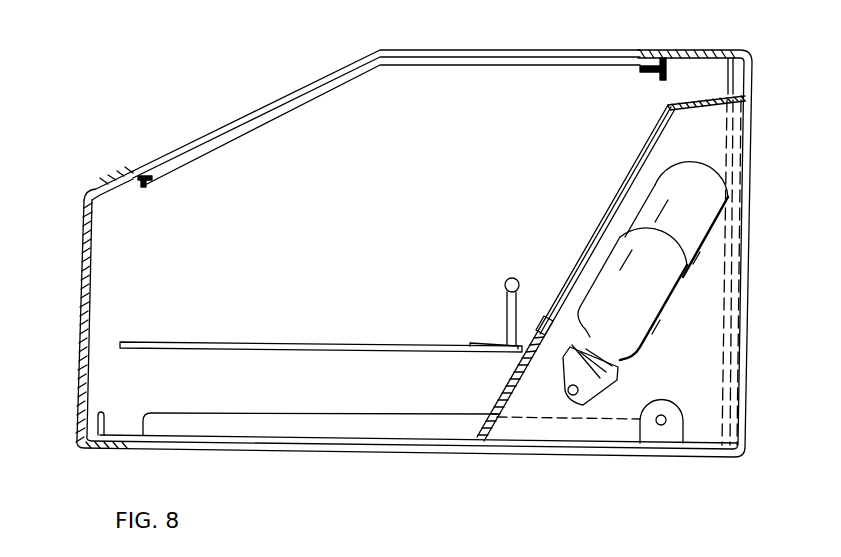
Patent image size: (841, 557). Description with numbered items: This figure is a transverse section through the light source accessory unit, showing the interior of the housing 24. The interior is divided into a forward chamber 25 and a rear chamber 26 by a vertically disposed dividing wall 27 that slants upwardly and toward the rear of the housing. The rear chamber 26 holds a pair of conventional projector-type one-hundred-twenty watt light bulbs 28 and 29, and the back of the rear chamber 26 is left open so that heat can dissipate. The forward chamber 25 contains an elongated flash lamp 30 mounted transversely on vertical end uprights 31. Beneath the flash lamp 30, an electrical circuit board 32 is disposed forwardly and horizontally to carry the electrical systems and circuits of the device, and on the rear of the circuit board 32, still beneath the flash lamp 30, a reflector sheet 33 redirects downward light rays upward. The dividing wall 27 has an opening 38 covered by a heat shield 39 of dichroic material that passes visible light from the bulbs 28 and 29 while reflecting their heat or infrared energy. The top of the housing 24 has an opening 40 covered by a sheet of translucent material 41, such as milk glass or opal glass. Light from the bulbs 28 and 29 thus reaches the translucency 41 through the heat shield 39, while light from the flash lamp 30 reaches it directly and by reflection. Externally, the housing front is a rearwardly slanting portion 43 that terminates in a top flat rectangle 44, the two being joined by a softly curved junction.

The housing 24 is at (82, 220).
The forward chamber 25 is at (97, 290).
The rear chamber 26 is at (708, 383).
The dividing wall 27 is at (512, 398).
The light bulb 28 is at (692, 315).
The light bulb 29 is at (707, 195).
The flash lamp 30 is at (515, 280).
The end uprights 31 is at (507, 322).
The electrical circuit board 32 is at (153, 342).
The reflector sheet 33 is at (483, 345).
The opening 38 is at (762, 125).
The heat shield 39 is at (745, 127).
The opening 40 is at (577, 48).
The sheet of translucent material 41 is at (498, 68).
The rearwardly slanting portion 43 is at (118, 173).
The top flat rectangle 44 is at (697, 50).